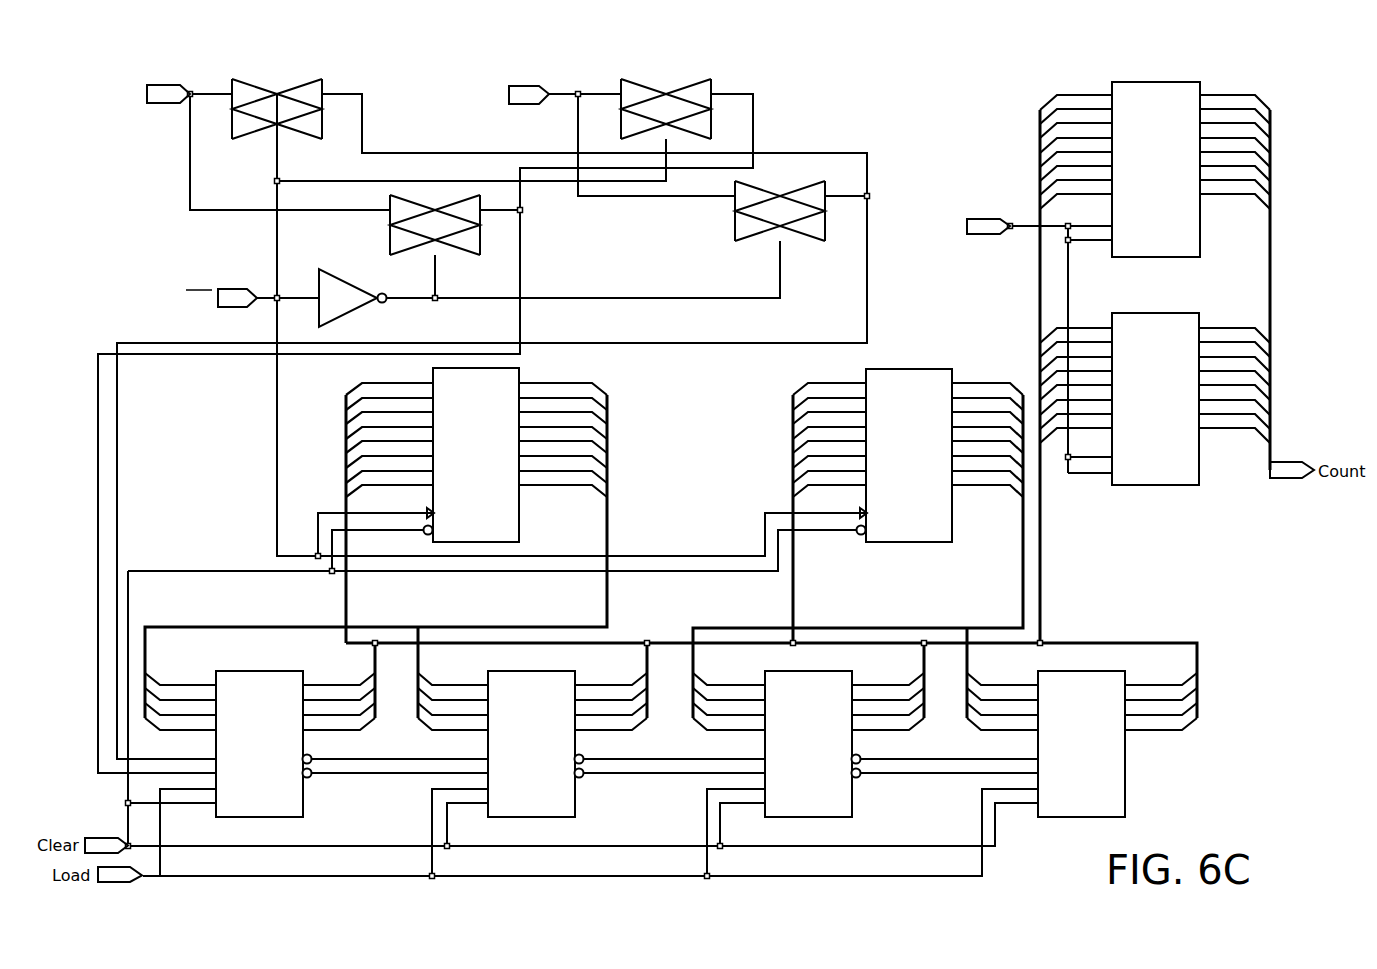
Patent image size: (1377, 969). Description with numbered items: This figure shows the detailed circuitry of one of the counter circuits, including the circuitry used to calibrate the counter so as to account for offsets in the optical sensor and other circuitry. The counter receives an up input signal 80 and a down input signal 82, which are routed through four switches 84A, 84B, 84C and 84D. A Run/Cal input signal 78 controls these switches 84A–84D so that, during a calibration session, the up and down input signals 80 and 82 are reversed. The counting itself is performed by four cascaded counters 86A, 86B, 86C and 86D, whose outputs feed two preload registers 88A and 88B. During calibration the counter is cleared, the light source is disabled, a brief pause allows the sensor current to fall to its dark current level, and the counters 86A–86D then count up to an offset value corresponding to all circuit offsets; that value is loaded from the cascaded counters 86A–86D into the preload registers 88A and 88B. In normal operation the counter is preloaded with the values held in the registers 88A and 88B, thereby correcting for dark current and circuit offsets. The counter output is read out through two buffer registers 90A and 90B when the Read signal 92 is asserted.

The Run/Cal input signal 78 is at (236, 290).
The up input signal 80 is at (160, 108).
The down input signal 82 is at (524, 106).
The switch 84A is at (278, 100).
The switch 84B is at (660, 103).
The switch 84C is at (390, 236).
The switch 84D is at (735, 228).
The cascaded counter 86A is at (304, 796).
The cascaded counter 86B is at (576, 796).
The cascaded counter 86C is at (852, 800).
The cascaded counter 86D is at (1125, 783).
The preload register 88A is at (520, 502).
The preload register 88B is at (925, 545).
The buffer register 90A is at (1160, 258).
The buffer register 90B is at (1163, 487).
The Read signal 92 is at (983, 236).